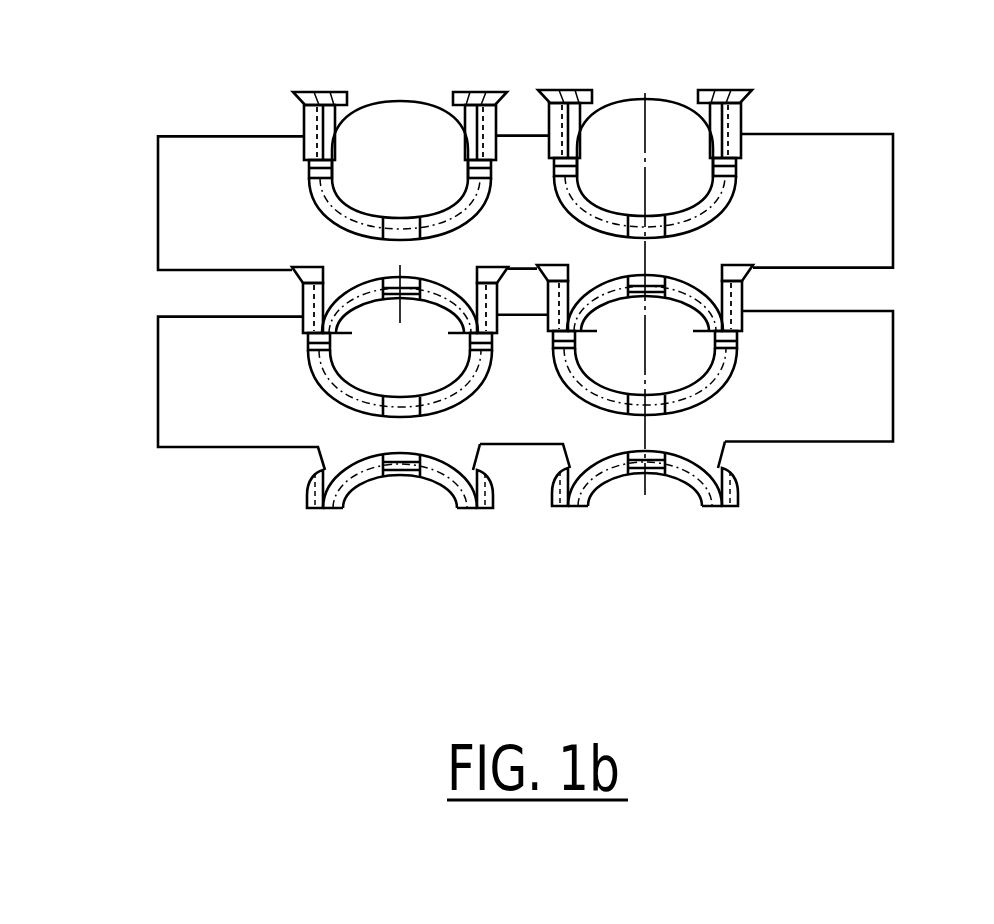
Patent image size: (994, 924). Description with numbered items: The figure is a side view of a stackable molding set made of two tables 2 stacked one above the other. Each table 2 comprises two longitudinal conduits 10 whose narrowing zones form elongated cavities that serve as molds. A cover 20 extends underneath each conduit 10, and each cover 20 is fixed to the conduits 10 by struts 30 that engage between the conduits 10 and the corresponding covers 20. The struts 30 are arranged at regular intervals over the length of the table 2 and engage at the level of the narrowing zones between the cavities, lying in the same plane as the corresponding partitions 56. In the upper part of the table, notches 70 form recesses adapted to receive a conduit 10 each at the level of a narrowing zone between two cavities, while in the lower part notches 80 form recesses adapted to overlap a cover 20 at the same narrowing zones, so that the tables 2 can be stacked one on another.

The table 2 is at (118, 200).
The longitudinal conduit 10 is at (307, 200).
The cover 20 is at (445, 278).
The strut 30 is at (220, 253).
The partition 56 is at (398, 113).
The notch 70 is at (342, 231).
The notch 80 is at (674, 267).